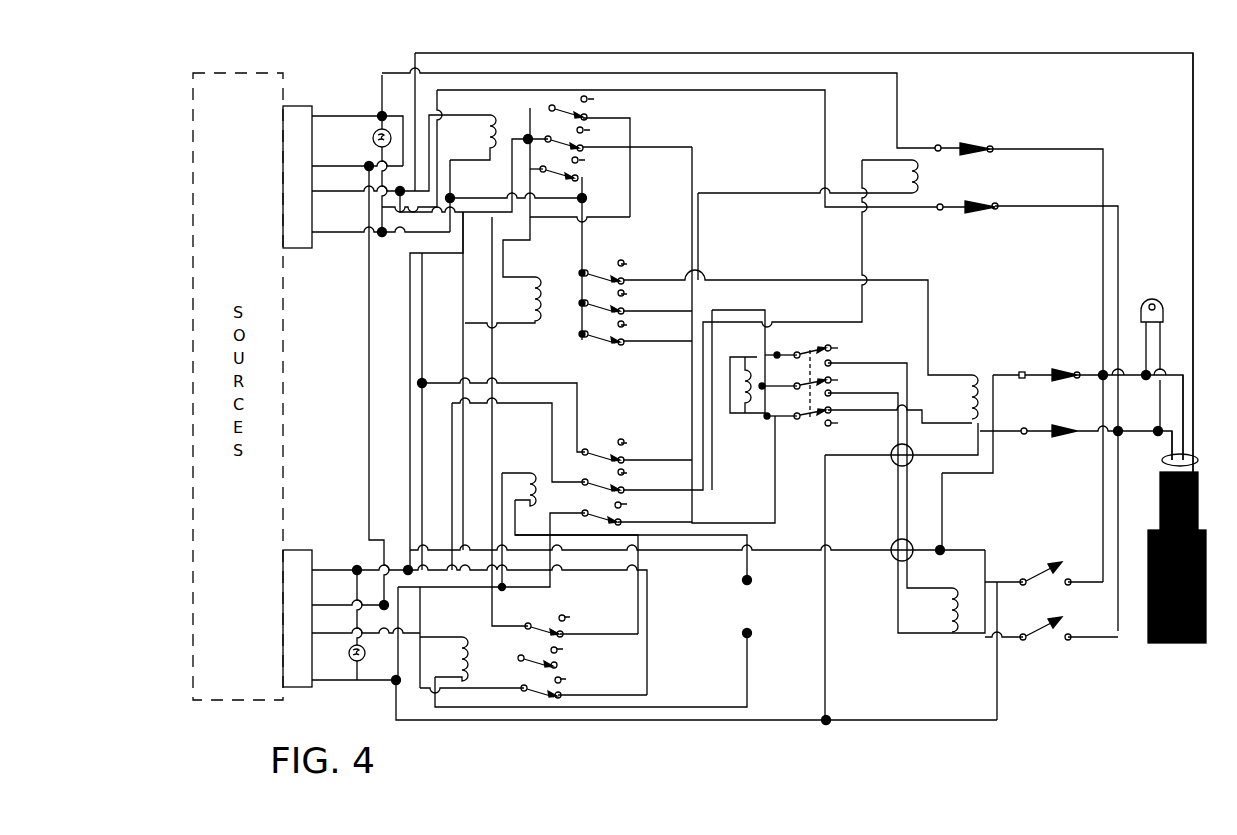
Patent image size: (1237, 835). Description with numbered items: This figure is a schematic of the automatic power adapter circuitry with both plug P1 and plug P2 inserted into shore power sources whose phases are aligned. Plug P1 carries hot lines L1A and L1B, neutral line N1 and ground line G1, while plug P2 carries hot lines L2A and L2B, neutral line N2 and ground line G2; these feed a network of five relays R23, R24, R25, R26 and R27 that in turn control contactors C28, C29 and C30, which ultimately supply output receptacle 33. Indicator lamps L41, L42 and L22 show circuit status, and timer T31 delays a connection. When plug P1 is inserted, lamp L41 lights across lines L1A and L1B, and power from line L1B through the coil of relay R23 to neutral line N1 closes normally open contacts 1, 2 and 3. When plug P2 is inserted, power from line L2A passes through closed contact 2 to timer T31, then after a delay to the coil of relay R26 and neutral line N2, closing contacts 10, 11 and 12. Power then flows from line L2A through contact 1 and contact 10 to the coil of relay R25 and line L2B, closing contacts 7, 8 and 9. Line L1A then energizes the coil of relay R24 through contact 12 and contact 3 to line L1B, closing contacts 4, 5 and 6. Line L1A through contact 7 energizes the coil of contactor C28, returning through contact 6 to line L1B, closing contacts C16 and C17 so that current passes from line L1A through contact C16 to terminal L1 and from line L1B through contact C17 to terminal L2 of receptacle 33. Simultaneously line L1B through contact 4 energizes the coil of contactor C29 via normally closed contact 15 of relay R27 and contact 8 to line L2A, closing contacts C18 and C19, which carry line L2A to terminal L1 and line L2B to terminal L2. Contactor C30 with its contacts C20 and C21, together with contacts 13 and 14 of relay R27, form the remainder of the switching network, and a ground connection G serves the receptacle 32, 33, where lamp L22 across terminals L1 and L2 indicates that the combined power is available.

The plug No. 1 P1 is at (318, 104).
The plug No. 2 P2 is at (318, 548).
The hot voltage line of plug P1 L1A is at (357, 132).
The ground line of plug P1 G1 is at (357, 157).
The neutral line of plug P1 N1 is at (398, 153).
The hot voltage line of plug P1 L1B is at (381, 224).
The 240 volt lamp L41 is at (372, 136).
The hot voltage line of plug P2 L2A is at (479, 624).
The ground line of plug P2 G2 is at (350, 599).
The neutral line of plug P2 N2 is at (366, 624).
The hot voltage line of plug P2 L2B is at (654, 692).
The indicator light L42 is at (349, 658).
The relay R23 is at (505, 122).
The relay R24 is at (558, 322).
The relay R25 is at (545, 442).
The relay R26 is at (482, 620).
The relay R27 is at (718, 370).
The contact of relay R23 1 is at (590, 112).
The contact of relay R23 2 is at (588, 142).
The contact of relay R23 3 is at (584, 173).
The contact of relay R24 4 is at (630, 272).
The contact of relay R24 5 is at (632, 304).
The contact of relay R24 6 is at (634, 334).
The contact of relay R25 7 is at (634, 450).
The contact of relay R25 8 is at (636, 481).
The contact of relay R25 9 is at (632, 513).
The contact of relay R26 10 is at (566, 622).
The contact of relay R26 11 is at (562, 656).
The contact of relay R26 12 is at (565, 688).
The contact of relay R27 13 is at (834, 352).
The contact of relay R27 14 is at (834, 386).
The normally closed contact of relay R27 15 is at (834, 424).
The contact of contactor C28 C16 is at (995, 145).
The contact of contactor C28 C17 is at (1000, 204).
The contact of contactor C29 C18 is at (1080, 370).
The contact of contactor C29 C19 is at (1080, 428).
The contact of contactor C30 C20 is at (1086, 558).
The contact of contactor C30 C21 is at (1068, 624).
The contactor C28 is at (962, 170).
The contactor C29 is at (988, 332).
The contactor C30 is at (972, 578).
The timer T31 is at (749, 607).
The 240 volt indicator lamp L22 is at (1156, 300).
The ground terminal G is at (1193, 358).
The L1 terminal L1 is at (1183, 416).
The L2 terminal L2 is at (1170, 440).
The output receptacle 32 is at (1164, 464).
The output receptacle 33 is at (1158, 516).